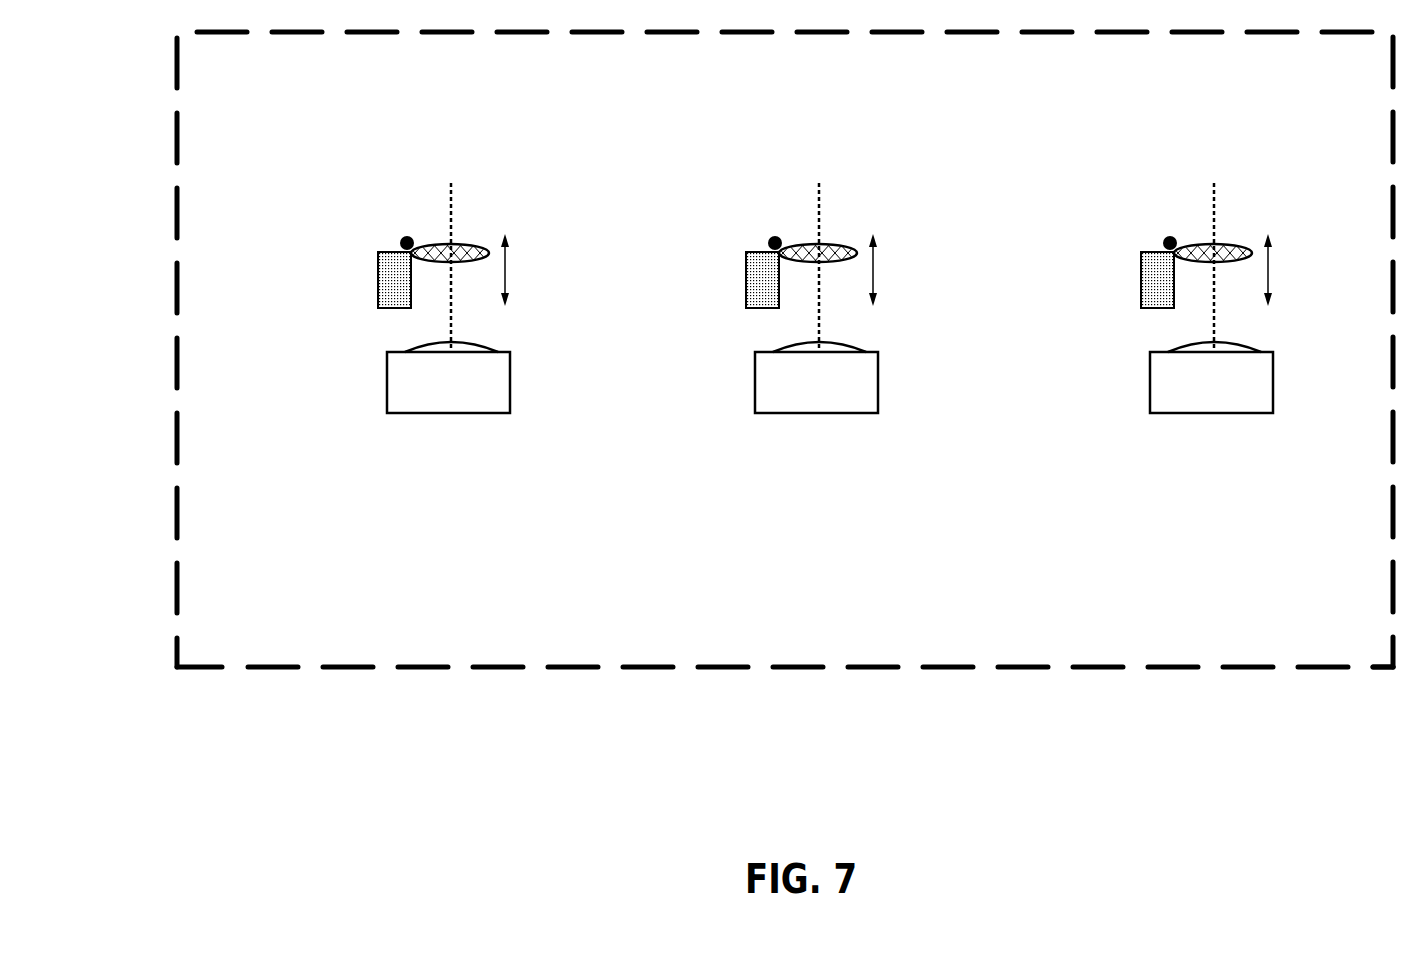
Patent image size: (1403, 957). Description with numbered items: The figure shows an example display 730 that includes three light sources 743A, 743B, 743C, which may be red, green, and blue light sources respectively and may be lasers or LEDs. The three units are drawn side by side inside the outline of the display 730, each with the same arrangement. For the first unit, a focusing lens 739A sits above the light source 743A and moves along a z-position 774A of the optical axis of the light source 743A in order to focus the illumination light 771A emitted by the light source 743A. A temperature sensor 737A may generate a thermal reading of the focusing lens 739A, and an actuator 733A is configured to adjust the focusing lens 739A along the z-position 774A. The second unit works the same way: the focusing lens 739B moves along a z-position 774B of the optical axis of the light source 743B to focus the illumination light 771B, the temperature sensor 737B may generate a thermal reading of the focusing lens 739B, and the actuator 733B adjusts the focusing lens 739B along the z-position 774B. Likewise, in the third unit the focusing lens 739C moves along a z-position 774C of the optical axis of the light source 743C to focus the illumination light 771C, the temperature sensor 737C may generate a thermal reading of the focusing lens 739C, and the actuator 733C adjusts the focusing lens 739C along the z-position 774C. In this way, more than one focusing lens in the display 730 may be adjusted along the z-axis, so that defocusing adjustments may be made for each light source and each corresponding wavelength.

The display 730 is at (1350, 645).
The temperature sensor 737A is at (406, 237).
The temperature sensor 737B is at (698, 223).
The temperature sensor 737C is at (1093, 223).
The focusing lens 739A is at (478, 243).
The focusing lens 739B is at (846, 228).
The focusing lens 739C is at (1241, 228).
The z-position 774A is at (507, 280).
The z-position 774B is at (906, 266).
The z-position 774C is at (1301, 266).
The illumination light 771A is at (453, 305).
The illumination light 771B is at (865, 266).
The illumination light 771C is at (1260, 266).
The actuator 733A is at (387, 309).
The actuator 733B is at (694, 354).
The actuator 733C is at (1089, 354).
The light source 743A is at (403, 414).
The light source 743B is at (823, 434).
The light source 743C is at (1218, 434).